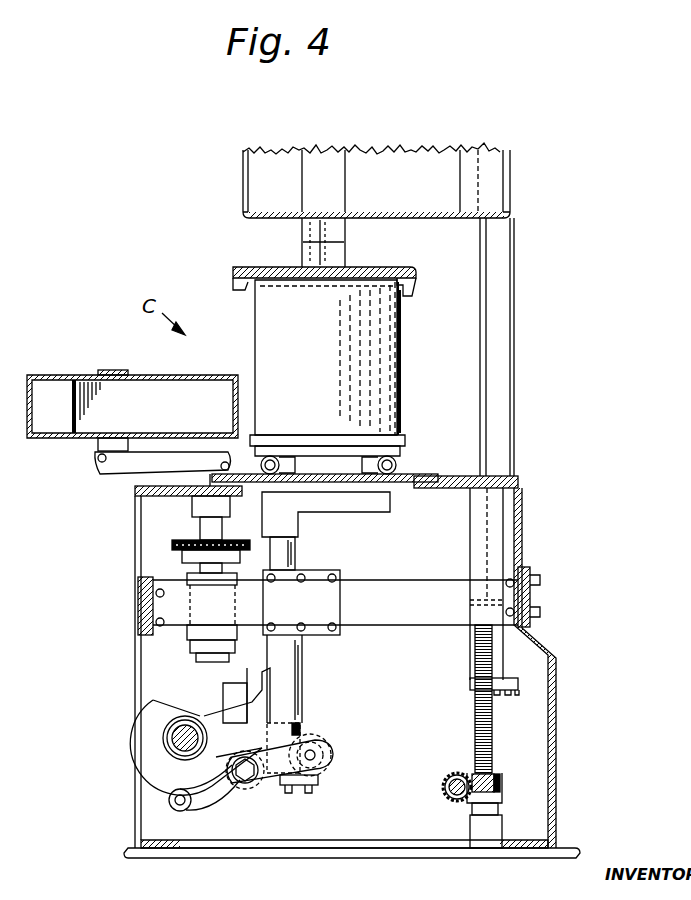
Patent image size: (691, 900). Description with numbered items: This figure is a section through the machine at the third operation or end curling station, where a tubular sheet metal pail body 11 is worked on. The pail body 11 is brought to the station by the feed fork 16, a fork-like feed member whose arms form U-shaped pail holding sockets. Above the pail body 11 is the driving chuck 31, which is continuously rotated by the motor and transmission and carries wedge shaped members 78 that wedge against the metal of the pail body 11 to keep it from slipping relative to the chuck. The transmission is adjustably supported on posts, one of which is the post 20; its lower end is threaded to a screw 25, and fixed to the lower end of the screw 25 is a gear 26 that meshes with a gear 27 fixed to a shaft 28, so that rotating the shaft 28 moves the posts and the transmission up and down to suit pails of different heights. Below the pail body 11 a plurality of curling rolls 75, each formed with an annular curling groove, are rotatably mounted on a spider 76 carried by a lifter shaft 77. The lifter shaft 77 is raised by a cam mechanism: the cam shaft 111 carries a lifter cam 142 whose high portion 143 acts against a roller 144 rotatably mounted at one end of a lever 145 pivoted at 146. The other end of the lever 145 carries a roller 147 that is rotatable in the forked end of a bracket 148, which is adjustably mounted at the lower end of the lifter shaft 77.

The pail body 11 is at (308, 371).
The feed fork 16 is at (61, 372).
The post 20 is at (514, 405).
The screw 25 is at (493, 738).
The gear 26 is at (502, 783).
The gear 27 is at (446, 790).
The shaft 28 is at (468, 796).
The driving chuck 31 is at (388, 271).
The curling rolls 75 is at (396, 468).
The spider 76 is at (343, 512).
The lifter shaft 77 is at (297, 553).
The wedge shaped members 78 is at (405, 292).
The cam shaft 111 is at (180, 735).
The lifter cam 142 is at (182, 780).
The high portion 143 is at (134, 763).
The roller 144 is at (166, 812).
The lever 145 is at (212, 808).
The pivot 146 is at (246, 780).
The roller 147 is at (333, 752).
The bracket 148 is at (299, 722).